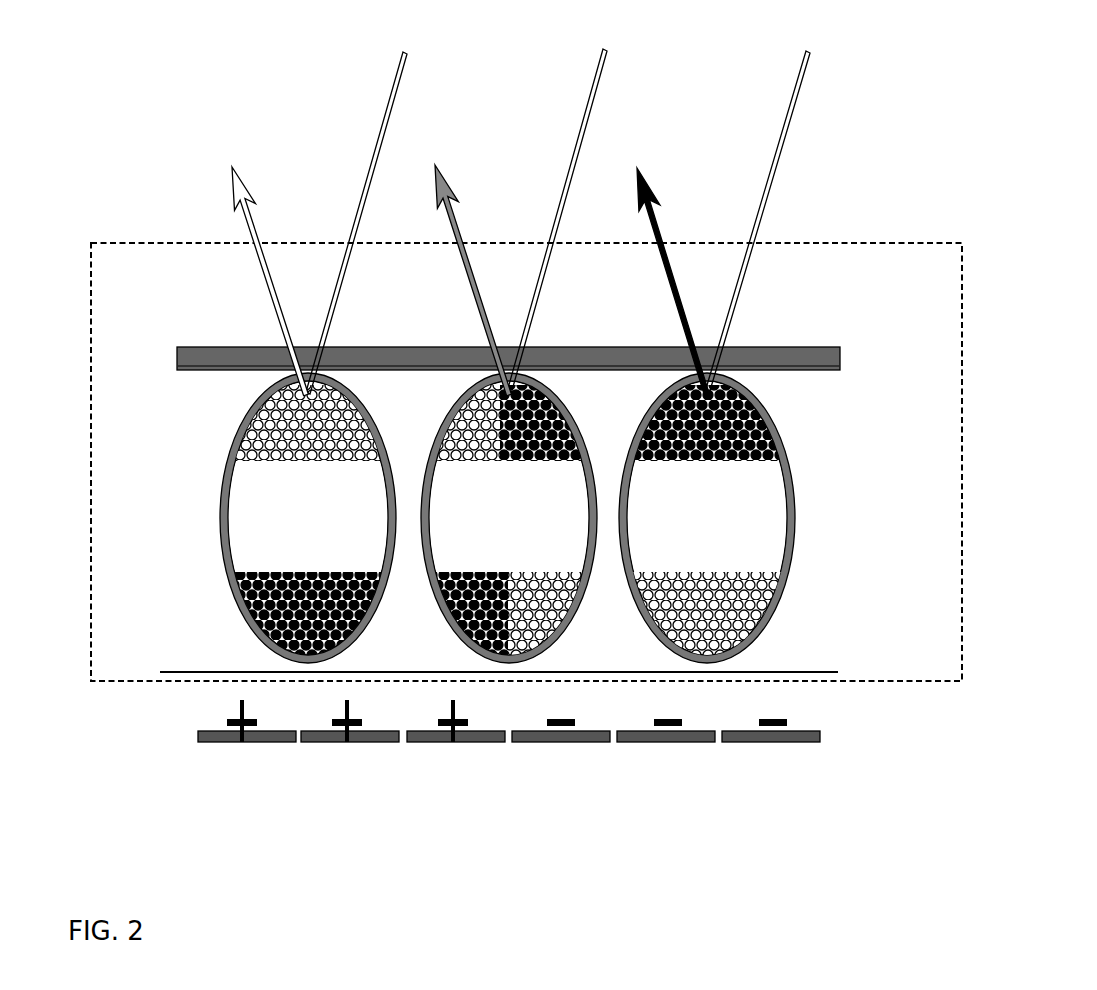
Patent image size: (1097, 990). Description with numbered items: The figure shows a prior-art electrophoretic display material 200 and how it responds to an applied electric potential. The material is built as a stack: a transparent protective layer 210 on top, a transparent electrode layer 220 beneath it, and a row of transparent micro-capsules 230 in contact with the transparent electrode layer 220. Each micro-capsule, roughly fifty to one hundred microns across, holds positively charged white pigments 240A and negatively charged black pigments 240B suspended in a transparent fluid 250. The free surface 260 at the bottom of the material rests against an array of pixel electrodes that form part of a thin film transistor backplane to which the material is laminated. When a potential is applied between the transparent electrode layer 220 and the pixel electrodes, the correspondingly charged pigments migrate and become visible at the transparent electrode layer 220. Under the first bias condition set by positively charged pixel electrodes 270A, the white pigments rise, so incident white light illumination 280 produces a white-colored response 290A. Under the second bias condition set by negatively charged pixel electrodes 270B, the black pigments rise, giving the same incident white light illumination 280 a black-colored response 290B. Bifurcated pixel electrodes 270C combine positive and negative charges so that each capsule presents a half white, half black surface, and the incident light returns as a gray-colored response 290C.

The electrophoretic display material 200 is at (116, 242).
The transparent protective layer 210 is at (843, 340).
The transparent electrode layer 220 is at (843, 372).
The transparent micro-capsules 230 is at (222, 553).
The positively charged white pigments 240A is at (240, 432).
The negatively charged black pigments 240B is at (244, 618).
The transparent fluid 250 is at (507, 518).
The free surface 260 is at (837, 675).
The positively charged pixel electrodes 270A is at (273, 745).
The bifurcated pixel electrodes 270C is at (477, 745).
The negatively charged pixel electrodes 270B is at (781, 745).
The incident white light illumination 280 is at (575, 205).
The white-colored response 290A is at (266, 241).
The gray-colored response 290C is at (478, 241).
The black-colored response 290B is at (685, 241).